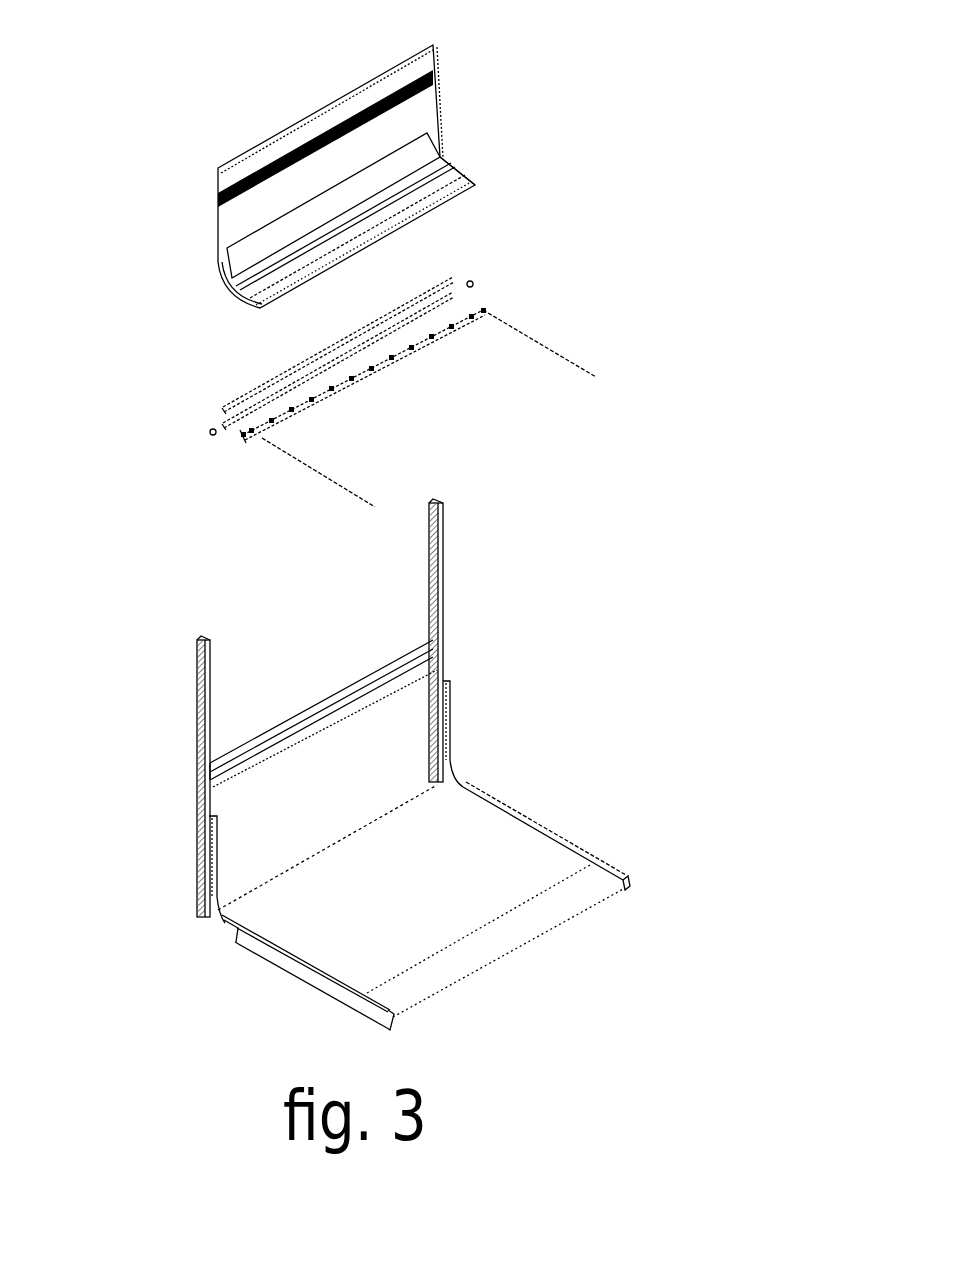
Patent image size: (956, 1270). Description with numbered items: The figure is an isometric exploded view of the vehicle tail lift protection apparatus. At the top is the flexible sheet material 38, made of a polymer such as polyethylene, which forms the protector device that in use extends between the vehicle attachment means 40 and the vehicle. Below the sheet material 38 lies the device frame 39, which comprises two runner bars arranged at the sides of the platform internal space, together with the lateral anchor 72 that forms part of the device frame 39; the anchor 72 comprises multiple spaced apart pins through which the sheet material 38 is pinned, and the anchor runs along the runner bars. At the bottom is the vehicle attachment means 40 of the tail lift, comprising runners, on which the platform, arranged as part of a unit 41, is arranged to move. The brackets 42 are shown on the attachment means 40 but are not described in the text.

The flexible sheet material 38 is at (505, 137).
The device frame 39 is at (192, 408).
The lateral anchor 72 is at (382, 357).
The vehicle attachment means 40 is at (484, 635).
The unit 41 is at (560, 803).
The brackets 42 is at (473, 719).